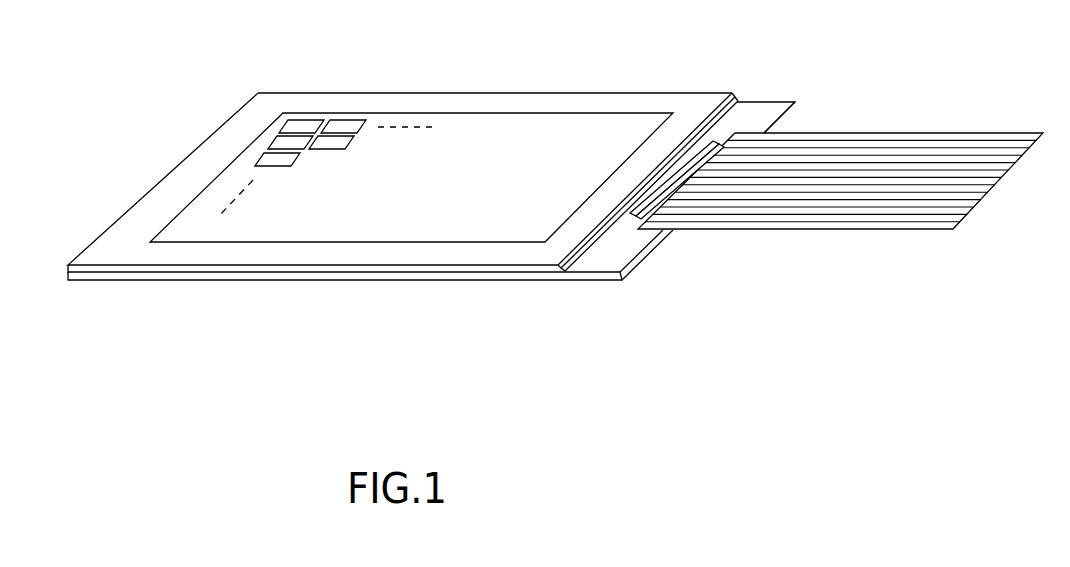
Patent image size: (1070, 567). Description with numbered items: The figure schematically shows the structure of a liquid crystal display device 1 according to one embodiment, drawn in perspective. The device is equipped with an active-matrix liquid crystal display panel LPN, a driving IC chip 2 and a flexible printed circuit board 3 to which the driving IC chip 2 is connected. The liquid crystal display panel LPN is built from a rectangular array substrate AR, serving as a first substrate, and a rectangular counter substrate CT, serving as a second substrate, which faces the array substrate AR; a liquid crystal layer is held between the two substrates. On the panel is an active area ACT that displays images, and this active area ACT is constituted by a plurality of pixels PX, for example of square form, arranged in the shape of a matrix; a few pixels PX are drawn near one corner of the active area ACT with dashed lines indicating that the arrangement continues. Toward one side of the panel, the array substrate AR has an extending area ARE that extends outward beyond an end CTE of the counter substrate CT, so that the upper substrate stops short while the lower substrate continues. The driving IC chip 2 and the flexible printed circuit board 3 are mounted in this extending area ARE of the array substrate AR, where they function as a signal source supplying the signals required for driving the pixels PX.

The liquid crystal display device 1 is at (814, 61).
The driving IC chip 2 is at (704, 121).
The flexible printed circuit board 3 is at (986, 131).
The liquid crystal display panel LPN is at (281, 91).
The pixel PX is at (311, 116).
The extending area ARE is at (765, 100).
The active area ACT is at (344, 252).
The counter substrate CT is at (436, 270).
The array substrate AR is at (490, 278).
The end of the counter substrate CTE is at (583, 254).